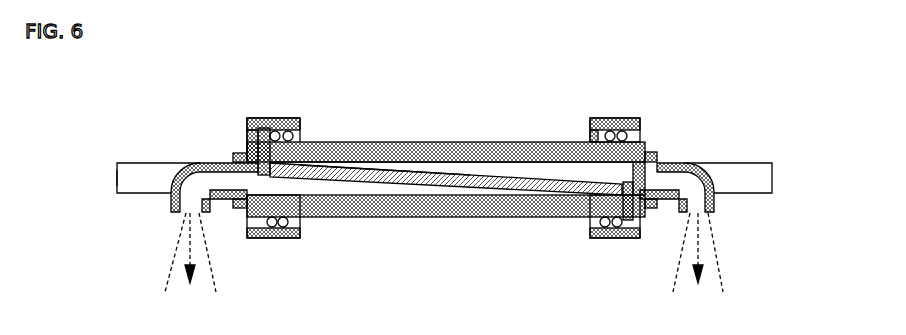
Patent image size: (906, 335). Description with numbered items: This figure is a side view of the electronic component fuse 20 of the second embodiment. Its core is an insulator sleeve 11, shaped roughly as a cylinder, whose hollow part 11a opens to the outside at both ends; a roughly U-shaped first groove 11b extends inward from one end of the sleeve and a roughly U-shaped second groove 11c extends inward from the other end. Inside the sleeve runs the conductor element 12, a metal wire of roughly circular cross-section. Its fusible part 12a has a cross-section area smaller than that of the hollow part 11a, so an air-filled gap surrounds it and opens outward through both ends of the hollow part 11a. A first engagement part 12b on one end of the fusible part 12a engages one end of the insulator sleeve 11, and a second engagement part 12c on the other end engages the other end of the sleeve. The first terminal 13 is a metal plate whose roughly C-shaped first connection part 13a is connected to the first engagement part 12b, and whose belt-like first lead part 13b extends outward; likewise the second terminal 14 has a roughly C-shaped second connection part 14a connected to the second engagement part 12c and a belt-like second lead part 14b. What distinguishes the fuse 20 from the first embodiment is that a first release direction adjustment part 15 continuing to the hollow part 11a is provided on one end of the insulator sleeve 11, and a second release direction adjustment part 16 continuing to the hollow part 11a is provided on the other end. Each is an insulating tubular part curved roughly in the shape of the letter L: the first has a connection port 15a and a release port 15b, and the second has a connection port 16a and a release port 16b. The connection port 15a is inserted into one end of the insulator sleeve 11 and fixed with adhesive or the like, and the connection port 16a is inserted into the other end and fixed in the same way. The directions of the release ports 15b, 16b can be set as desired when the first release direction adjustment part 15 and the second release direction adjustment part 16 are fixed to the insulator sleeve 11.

The insulator sleeve 11 is at (368, 147).
The hollow part 11a is at (410, 168).
The first groove 11b is at (245, 152).
The second groove 11c is at (655, 218).
The conductor element 12 is at (519, 188).
The fusible part 12a is at (472, 174).
The first engagement part 12b is at (272, 128).
The second engagement part 12c is at (620, 128).
The first terminal 13 is at (287, 118).
The first connection part 13a is at (267, 239).
The first lead part 13b is at (151, 162).
The second terminal 14 is at (603, 118).
The second connection part 14a is at (617, 239).
The second lead part 14b is at (740, 163).
The first release direction adjustment part 15 is at (205, 165).
The connection port 15a is at (240, 209).
The release port 15b is at (172, 213).
The second release direction adjustment part 16 is at (678, 163).
The connection port 16a is at (651, 152).
The release port 16b is at (716, 213).
The electronic component fuse 20 is at (127, 156).